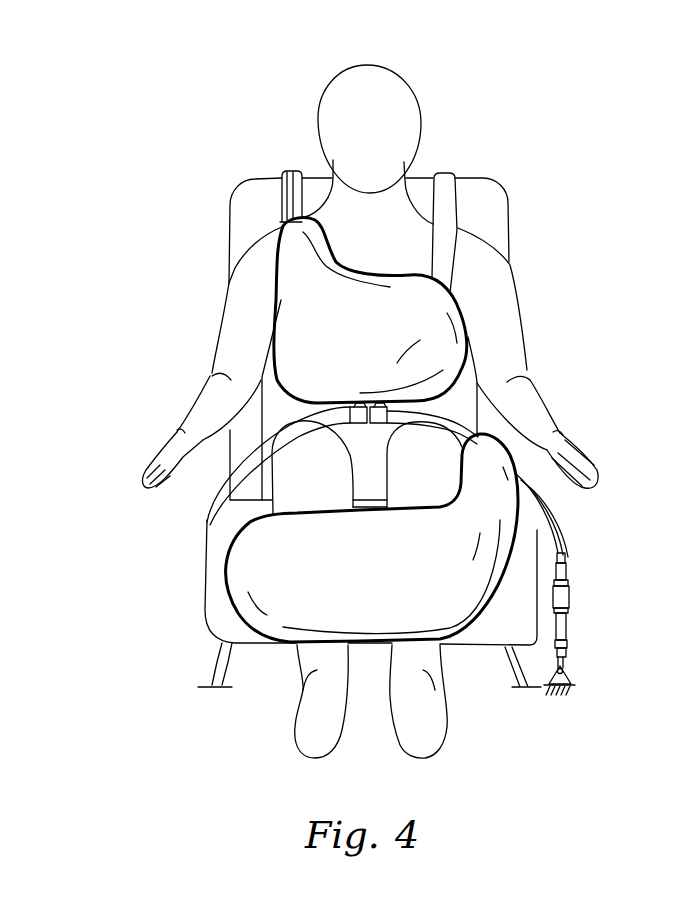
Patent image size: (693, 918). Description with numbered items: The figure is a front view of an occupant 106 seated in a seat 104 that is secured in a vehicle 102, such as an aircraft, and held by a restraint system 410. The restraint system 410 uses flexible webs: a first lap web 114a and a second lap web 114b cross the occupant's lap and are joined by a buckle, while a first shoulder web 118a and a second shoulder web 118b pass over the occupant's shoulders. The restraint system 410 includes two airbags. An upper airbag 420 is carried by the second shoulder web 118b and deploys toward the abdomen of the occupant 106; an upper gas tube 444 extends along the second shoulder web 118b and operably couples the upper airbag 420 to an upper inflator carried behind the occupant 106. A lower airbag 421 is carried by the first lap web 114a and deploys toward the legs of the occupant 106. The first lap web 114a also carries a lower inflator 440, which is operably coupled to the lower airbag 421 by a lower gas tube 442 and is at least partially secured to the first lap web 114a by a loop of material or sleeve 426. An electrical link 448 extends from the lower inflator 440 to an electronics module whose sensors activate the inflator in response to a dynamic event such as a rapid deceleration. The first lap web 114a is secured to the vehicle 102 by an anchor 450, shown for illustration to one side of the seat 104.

The restraint system 410 is at (186, 146).
The upper gas tube 444 is at (293, 192).
The first shoulder web 118a is at (453, 208).
The second shoulder web 118b is at (282, 208).
The upper airbag 420 is at (303, 340).
The first lap web 114a is at (540, 533).
The second lap web 114b is at (217, 497).
The lower airbag 421 is at (270, 588).
The lower gas tube 442 is at (552, 510).
The sleeve 426 is at (568, 606).
The lower inflator 440 is at (565, 628).
The electrical link 448 is at (568, 663).
The anchor 450 is at (578, 688).
The seat 104 is at (498, 632).
The occupant 106 is at (297, 742).
The vehicle 102 is at (530, 773).